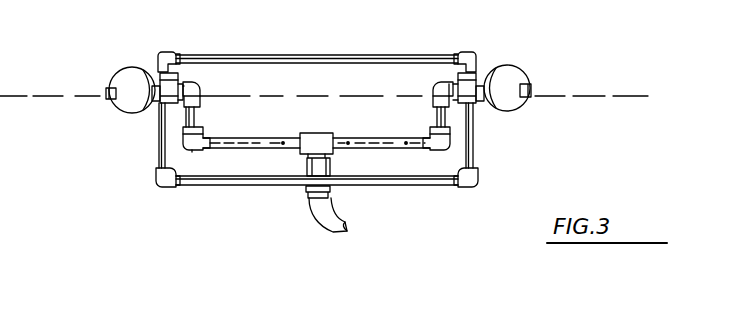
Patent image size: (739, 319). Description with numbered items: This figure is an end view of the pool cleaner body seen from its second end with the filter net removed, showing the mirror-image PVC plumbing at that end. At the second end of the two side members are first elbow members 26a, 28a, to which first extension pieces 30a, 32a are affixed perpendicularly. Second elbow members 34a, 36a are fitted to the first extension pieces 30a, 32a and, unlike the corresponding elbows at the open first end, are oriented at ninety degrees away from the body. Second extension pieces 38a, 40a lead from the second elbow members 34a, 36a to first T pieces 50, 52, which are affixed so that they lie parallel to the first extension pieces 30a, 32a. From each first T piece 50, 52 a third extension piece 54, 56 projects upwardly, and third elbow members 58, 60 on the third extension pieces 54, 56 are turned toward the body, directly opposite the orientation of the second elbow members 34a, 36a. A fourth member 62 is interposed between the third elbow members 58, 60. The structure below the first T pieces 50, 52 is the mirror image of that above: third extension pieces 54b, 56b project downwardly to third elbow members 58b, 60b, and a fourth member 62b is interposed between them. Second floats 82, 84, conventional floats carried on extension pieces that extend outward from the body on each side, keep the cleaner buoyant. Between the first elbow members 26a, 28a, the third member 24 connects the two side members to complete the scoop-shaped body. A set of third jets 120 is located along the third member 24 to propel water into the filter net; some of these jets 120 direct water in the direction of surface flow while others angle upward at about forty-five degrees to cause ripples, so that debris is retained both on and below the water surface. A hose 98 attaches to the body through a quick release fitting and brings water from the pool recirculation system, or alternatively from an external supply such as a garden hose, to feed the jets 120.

The third member 24 is at (273, 137).
The first elbow member 26a is at (198, 153).
The first elbow member 28a is at (448, 144).
The first extension piece 30a is at (200, 118).
The first extension piece 32a is at (433, 115).
The second elbow member 34a is at (200, 95).
The second elbow member 36a is at (437, 95).
The second extension piece 38a is at (190, 83).
The second extension piece 40a is at (455, 70).
The first T piece 50 is at (153, 92).
The first T piece 52 is at (495, 106).
The third extension piece 54 is at (175, 78).
The third extension piece 54b is at (157, 133).
The third extension piece 56 is at (490, 63).
The third extension piece 56b is at (478, 138).
The third elbow member 58 is at (160, 52).
The third elbow member 58b is at (152, 175).
The third elbow member 60 is at (472, 52).
The third elbow member 60b is at (474, 186).
The fourth member 62 is at (320, 55).
The fourth member 62b is at (376, 186).
The second float 82 is at (130, 68).
The second float 84 is at (521, 80).
The hose 98 is at (303, 215).
The third jets 120 is at (349, 146).